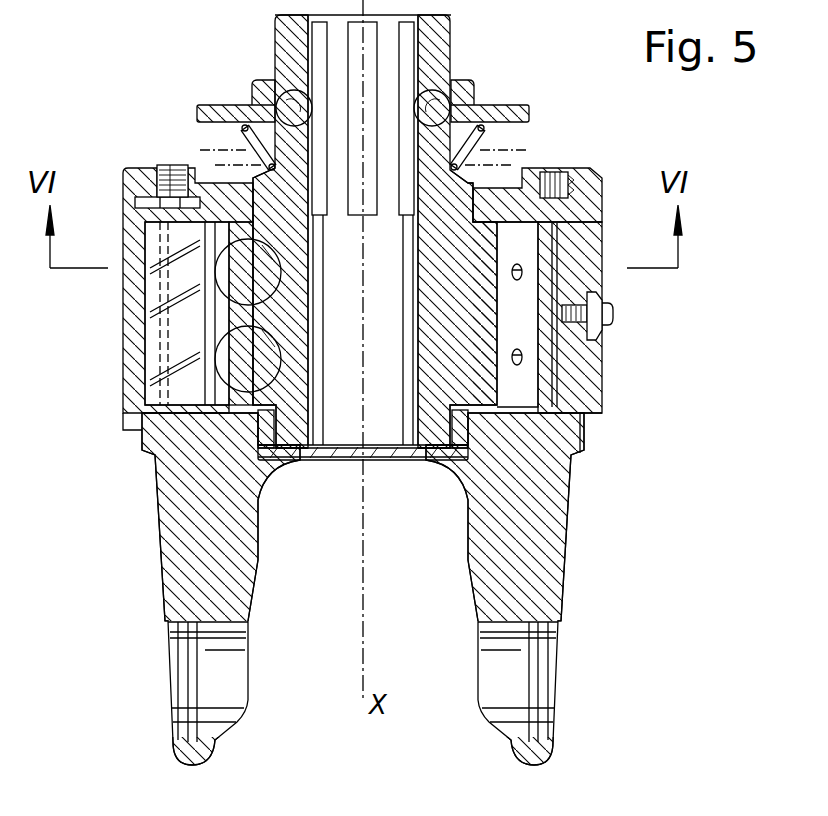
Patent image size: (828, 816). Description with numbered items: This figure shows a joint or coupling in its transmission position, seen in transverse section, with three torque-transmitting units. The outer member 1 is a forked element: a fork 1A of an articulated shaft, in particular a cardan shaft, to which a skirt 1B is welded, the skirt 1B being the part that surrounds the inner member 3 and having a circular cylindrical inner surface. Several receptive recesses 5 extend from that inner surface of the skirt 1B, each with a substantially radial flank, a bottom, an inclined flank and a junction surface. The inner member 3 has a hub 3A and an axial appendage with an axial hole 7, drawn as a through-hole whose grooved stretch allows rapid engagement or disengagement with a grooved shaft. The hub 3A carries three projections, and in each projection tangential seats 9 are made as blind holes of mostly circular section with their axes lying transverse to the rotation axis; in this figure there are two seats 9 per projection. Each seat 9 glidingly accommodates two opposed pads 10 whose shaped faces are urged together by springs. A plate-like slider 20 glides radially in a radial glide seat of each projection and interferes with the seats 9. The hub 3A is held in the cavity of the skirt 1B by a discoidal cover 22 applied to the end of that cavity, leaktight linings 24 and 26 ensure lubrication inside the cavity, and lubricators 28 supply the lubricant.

The outer member 1 is at (373, 435).
The fork 1A is at (180, 548).
The skirt 1B is at (125, 350).
The inner member 3 is at (275, 52).
The hub 3A is at (443, 376).
The receptive recess 5 is at (126, 303).
The axial hole 7 is at (338, 433).
The tangential seat 9 is at (262, 245).
The pad 10 is at (247, 182).
The plate-like slider 20 is at (215, 385).
The discoidal cover 22 is at (152, 172).
The leaktight lining 24 is at (462, 478).
The leaktight lining 26 is at (487, 200).
The lubricator 28 is at (614, 321).